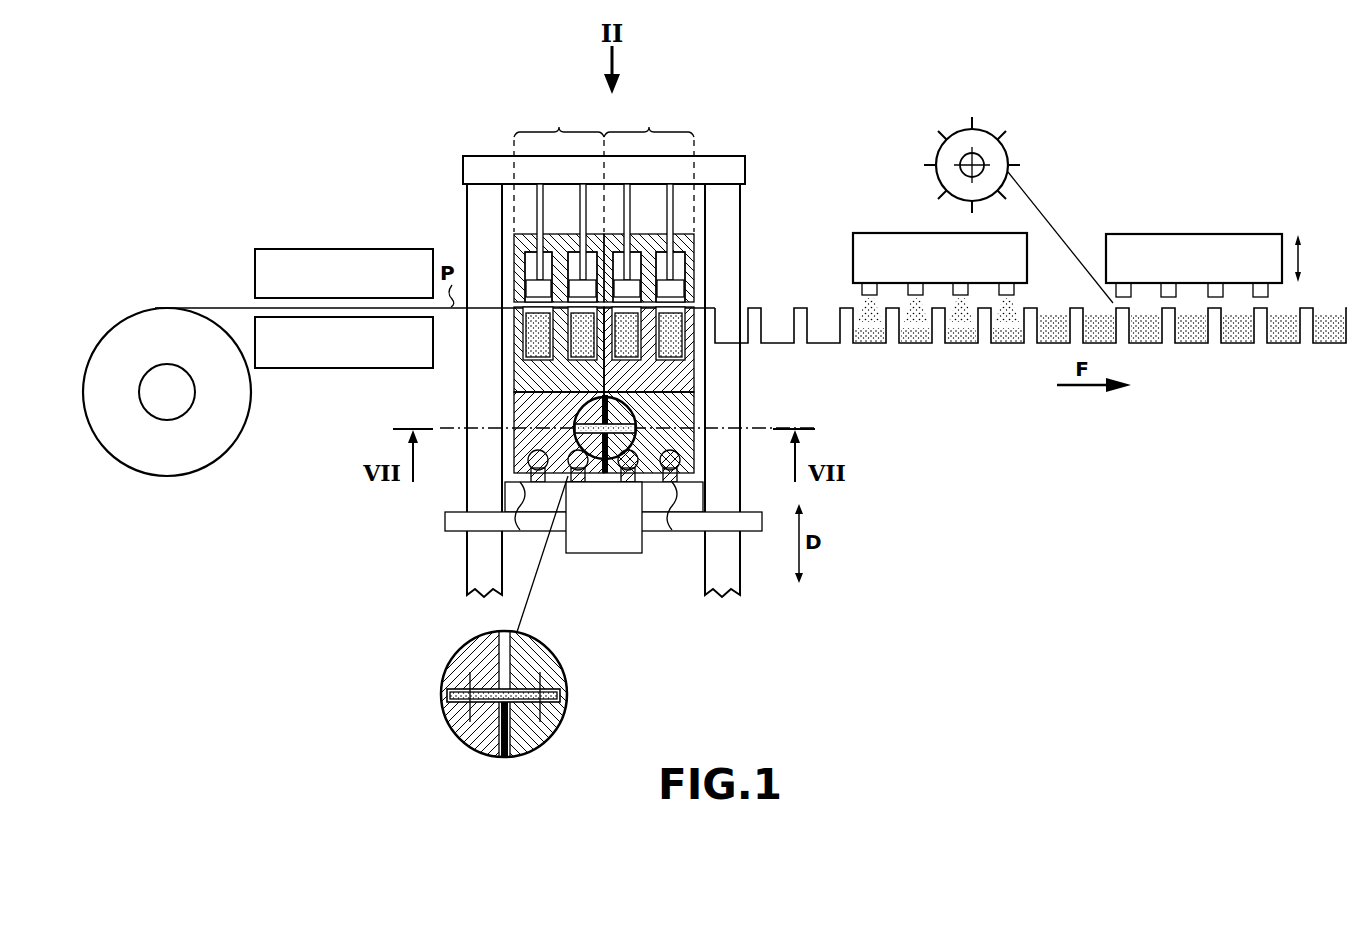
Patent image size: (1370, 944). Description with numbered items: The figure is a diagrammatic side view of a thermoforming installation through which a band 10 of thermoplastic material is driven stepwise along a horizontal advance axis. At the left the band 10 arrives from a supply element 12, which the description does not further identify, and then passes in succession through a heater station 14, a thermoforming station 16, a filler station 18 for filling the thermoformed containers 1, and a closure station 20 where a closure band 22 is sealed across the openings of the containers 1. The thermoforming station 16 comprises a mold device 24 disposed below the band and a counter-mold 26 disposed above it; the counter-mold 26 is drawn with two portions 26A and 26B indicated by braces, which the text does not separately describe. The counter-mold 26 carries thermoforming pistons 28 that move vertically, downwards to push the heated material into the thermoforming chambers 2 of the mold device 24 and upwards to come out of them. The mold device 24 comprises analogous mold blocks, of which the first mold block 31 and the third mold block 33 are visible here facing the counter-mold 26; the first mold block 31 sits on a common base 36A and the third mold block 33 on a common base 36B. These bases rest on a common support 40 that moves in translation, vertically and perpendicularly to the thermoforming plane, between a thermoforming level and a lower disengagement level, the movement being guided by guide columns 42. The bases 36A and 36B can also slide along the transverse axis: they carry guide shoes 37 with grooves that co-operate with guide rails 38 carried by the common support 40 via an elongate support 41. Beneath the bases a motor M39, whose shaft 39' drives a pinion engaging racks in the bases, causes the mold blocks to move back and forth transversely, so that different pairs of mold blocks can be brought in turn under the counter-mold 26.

The containers 1 is at (820, 340).
The thermoforming chambers 2 is at (525, 312).
The band 10 is at (215, 306).
The supply roll 12 is at (165, 462).
The heater station 14 is at (314, 232).
The thermoforming station 16 is at (496, 147).
The filler station 18 is at (876, 226).
The closure station 20 is at (1193, 220).
The closure band 22 is at (1054, 225).
The mold device 24 is at (763, 374).
The counter-mold 26 is at (747, 226).
The first forming unit half 26A is at (559, 204).
The second forming unit half 26B is at (649, 204).
The thermoforming pistons 28 is at (690, 288).
The first mold block 31 is at (530, 380).
The third mold block 33 is at (680, 380).
The common base 36A is at (530, 418).
The common base 36B is at (690, 413).
The guide shoes 37 is at (528, 455).
The guide rails 38 is at (676, 496).
The shaft 39' is at (506, 706).
The common support 40 is at (750, 527).
The elongate support 41 is at (702, 497).
The guide columns 42 is at (470, 207).
The motor M39 is at (605, 548).